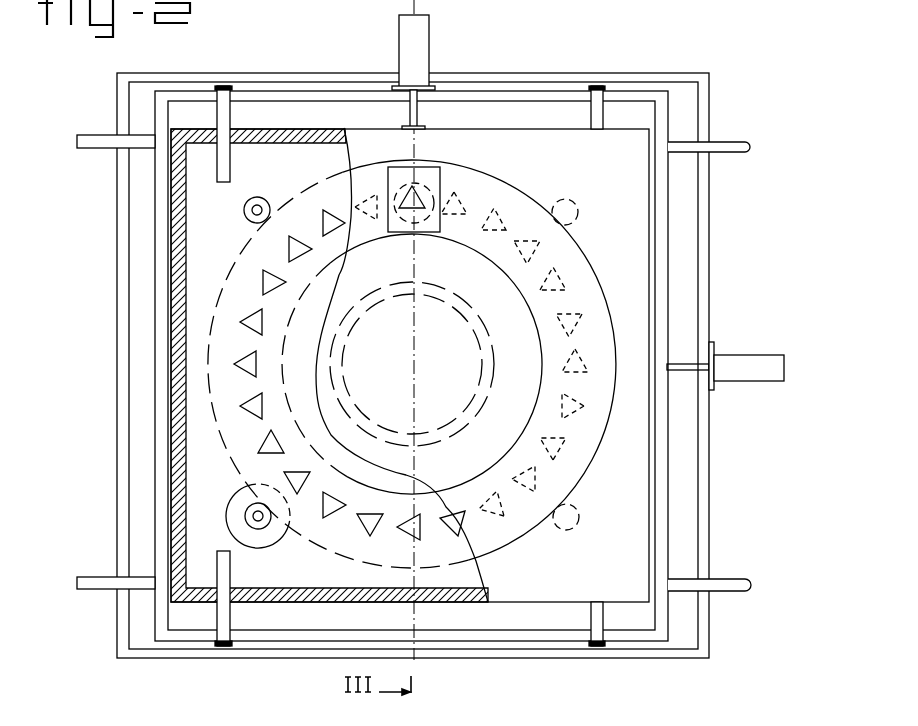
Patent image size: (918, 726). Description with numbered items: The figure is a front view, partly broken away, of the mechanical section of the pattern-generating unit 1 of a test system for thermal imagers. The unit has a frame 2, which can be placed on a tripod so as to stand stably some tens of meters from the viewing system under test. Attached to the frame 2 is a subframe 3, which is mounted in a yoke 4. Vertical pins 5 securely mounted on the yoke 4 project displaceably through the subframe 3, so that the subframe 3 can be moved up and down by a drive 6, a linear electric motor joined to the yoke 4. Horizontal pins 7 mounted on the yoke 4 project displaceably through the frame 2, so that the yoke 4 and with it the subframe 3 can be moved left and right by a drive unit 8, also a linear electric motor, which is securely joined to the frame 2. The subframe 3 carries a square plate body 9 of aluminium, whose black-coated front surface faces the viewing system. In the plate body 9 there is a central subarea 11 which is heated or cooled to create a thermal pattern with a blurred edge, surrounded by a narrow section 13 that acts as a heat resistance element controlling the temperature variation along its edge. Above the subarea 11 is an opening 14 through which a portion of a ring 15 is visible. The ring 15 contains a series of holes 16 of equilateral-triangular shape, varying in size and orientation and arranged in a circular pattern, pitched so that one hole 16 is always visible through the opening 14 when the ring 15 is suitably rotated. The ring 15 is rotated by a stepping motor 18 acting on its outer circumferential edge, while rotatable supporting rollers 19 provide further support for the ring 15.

The pattern-generating unit 1 is at (598, 56).
The frame 2 is at (707, 115).
The subframe 3 is at (176, 307).
The yoke 4 is at (162, 238).
The vertical pins 5 is at (227, 619).
The drive 6 is at (421, 53).
The horizontal pins 7 is at (735, 148).
The drive unit 8 is at (752, 367).
The plate body 9 is at (634, 557).
The central subarea 11 is at (458, 366).
The narrow section 13 is at (440, 288).
The opening 14 is at (430, 188).
The ring 15 is at (341, 546).
The holes 16 is at (243, 363).
The stepping motor 18 is at (263, 538).
The supporting rollers 19 is at (252, 198).